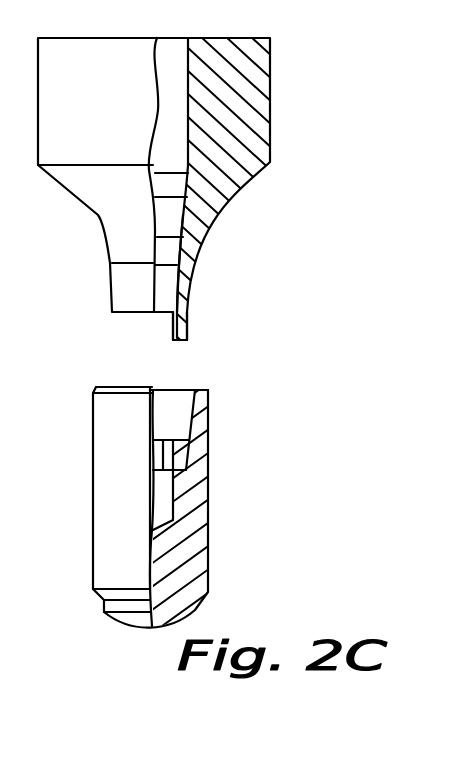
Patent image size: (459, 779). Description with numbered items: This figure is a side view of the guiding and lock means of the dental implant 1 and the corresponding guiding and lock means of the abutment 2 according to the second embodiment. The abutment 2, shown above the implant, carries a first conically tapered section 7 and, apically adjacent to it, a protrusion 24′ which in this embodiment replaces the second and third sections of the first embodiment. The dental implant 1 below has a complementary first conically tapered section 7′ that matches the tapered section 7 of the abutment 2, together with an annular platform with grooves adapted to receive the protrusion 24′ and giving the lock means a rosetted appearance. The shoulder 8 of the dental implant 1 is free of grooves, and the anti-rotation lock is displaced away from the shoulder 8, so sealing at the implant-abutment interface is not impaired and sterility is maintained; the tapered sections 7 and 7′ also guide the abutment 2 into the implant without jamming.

The abutment 2 is at (255, 108).
The first conically tapered section 7 is at (197, 272).
The protrusion 24′ is at (188, 305).
The shoulder 8 is at (208, 390).
The first conically tapered section 7′ is at (191, 407).
The dental implant 1 is at (178, 552).